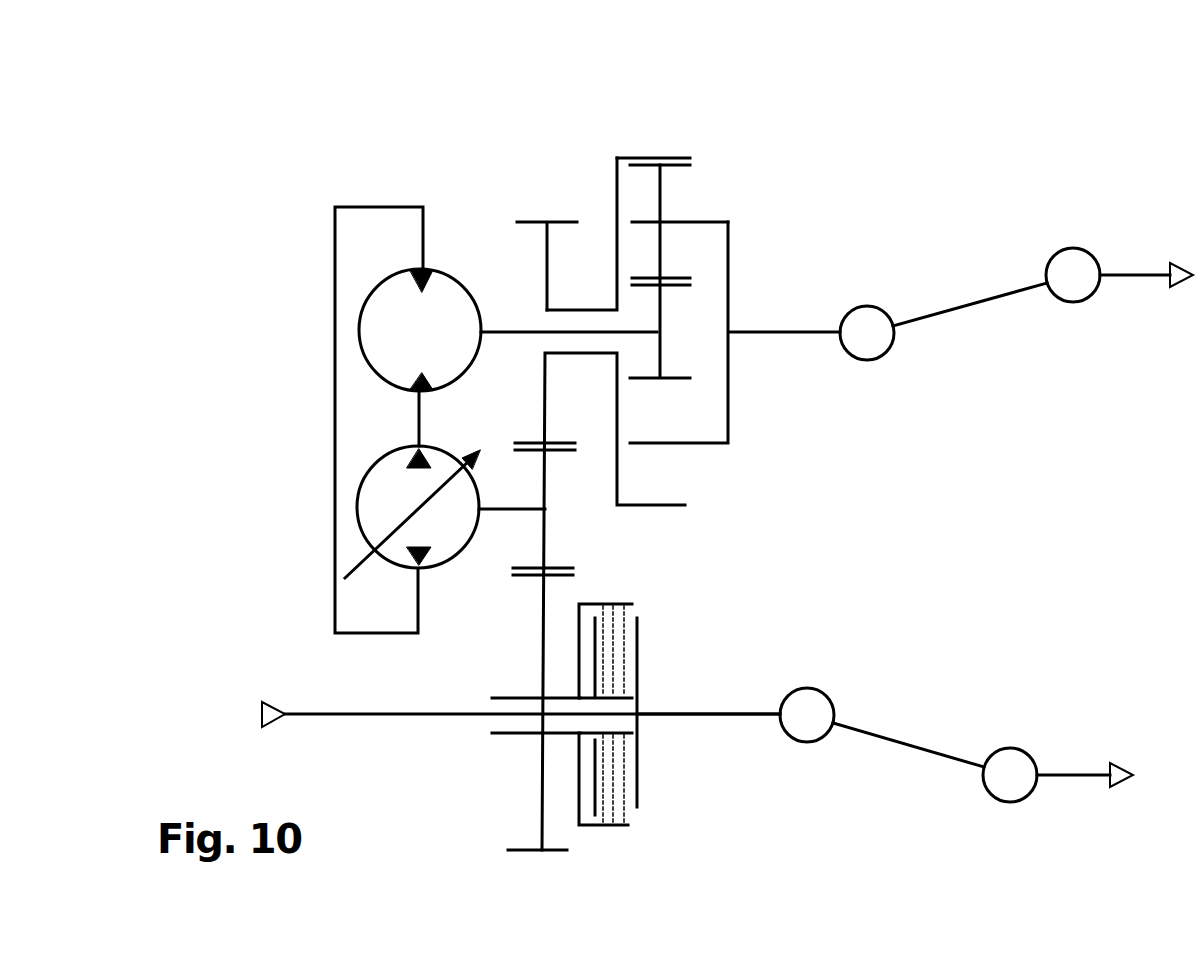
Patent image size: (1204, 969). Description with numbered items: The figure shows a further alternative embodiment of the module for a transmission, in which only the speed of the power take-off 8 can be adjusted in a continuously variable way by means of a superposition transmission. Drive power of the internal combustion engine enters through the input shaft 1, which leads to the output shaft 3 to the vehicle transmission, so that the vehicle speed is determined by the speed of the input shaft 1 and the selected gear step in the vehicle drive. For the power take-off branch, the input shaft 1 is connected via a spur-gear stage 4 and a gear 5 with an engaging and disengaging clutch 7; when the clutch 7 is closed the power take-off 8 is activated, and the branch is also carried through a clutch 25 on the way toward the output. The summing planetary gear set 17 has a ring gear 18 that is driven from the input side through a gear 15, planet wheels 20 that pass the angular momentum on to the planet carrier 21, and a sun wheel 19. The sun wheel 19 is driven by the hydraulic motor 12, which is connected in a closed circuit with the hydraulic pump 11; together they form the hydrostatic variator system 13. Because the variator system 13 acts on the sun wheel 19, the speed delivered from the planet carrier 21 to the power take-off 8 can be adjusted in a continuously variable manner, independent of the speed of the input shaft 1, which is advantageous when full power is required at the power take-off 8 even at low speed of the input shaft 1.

The input shaft 1 is at (328, 708).
The output shaft 3 is at (708, 708).
The spur-gear stage 4 is at (585, 572).
The gear 5 is at (538, 737).
The clutch 7 is at (617, 770).
The power take-off 8 is at (1140, 262).
The hydraulic pump 11 is at (452, 557).
The hydraulic motor 12 is at (447, 270).
The variator system 13 is at (318, 288).
The gear 15 is at (545, 220).
The summing planetary gear set 17 is at (667, 128).
The ring gear 18 is at (617, 185).
The sun wheel 19 is at (660, 322).
The planet wheels 20 is at (663, 203).
The planet carrier 21 is at (733, 310).
The output 25 is at (1078, 762).